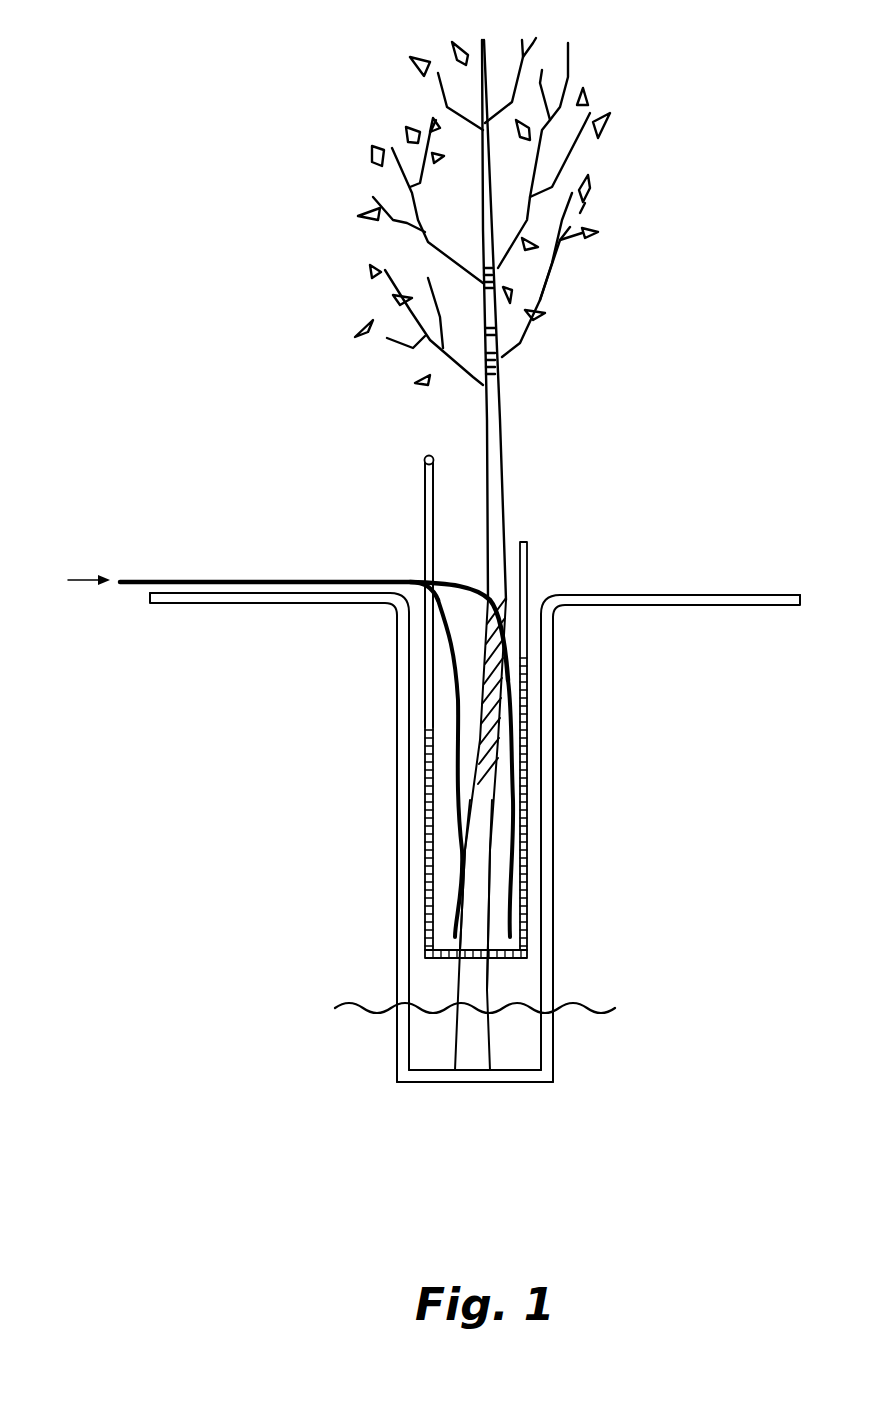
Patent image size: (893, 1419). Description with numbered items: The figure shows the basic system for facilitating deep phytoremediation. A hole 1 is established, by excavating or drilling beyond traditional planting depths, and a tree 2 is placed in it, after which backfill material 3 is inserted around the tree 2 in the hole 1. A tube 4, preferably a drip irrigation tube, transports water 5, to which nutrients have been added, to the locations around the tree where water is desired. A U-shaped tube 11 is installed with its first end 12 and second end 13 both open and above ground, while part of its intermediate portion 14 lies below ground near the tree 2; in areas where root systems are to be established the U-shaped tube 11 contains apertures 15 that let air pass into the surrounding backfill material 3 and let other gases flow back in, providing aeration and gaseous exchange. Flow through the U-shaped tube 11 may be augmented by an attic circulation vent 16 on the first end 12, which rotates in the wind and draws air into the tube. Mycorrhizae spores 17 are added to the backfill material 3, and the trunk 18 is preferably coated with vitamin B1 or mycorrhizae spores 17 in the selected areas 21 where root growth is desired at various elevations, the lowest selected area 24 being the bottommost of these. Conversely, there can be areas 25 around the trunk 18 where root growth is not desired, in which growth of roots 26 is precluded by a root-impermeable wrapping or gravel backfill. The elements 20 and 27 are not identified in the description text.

The hole 1 is at (418, 1083).
The tree 2 is at (503, 393).
The backfill material 3 is at (512, 988).
The tube 4 is at (508, 892).
The water 5 is at (240, 583).
The U-shaped tube 11 is at (430, 712).
The first end 12 is at (329, 648).
The second end 13 is at (611, 710).
The intermediate portion 14 is at (428, 922).
The apertures 15 is at (428, 937).
The attic circulation vent 16 is at (428, 456).
The mycorrhizae spores 17 is at (475, 837).
The trunk 18 is at (472, 895).
The bottom of liner 20 is at (393, 1078).
The selected areas 21 is at (443, 833).
The lowest selected area 24 is at (390, 1057).
The areas 25 is at (493, 711).
The roots 26 is at (624, 822).
The water flow path 27 is at (513, 597).